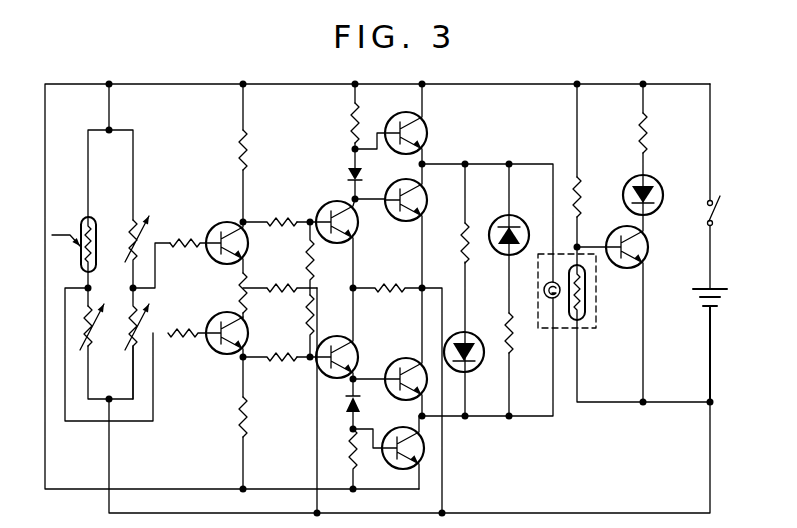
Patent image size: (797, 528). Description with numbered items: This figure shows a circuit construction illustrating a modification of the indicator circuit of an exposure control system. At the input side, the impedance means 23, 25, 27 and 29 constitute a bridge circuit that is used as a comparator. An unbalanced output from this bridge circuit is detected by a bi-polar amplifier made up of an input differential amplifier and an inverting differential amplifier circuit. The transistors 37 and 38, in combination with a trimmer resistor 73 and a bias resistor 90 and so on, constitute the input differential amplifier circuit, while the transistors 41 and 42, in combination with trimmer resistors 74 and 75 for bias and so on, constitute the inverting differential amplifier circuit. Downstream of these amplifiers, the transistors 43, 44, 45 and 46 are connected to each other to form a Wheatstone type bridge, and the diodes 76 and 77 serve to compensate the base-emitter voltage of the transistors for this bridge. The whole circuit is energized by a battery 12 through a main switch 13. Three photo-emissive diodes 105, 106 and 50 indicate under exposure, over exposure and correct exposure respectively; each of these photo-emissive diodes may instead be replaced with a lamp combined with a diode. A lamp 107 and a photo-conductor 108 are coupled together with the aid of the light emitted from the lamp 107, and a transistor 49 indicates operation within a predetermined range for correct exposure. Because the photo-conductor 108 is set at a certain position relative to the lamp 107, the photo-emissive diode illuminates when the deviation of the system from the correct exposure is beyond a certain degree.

The battery 12 is at (722, 288).
The main switch 13 is at (723, 208).
The impedance means 23 is at (97, 220).
The impedance means 25 is at (92, 348).
The impedance means 27 is at (139, 226).
The impedance means 29 is at (142, 322).
The transistor 37 is at (249, 327).
The transistor 38 is at (212, 225).
The transistor 41 is at (350, 339).
The transistor 42 is at (322, 206).
The transistor 43 is at (425, 454).
The transistor 44 is at (405, 358).
The transistor 45 is at (426, 209).
The transistor 46 is at (424, 122).
The transistor 49 is at (648, 245).
The photo-emissive diode 50 is at (652, 177).
The trimmer resistor 73 is at (240, 292).
The trimmer resistor 74 is at (313, 258).
The trimmer resistor 75 is at (313, 318).
The diode 76 is at (362, 172).
The diode 77 is at (361, 404).
The bias resistor 90 is at (283, 287).
The photo-emissive diode 105 is at (472, 334).
The photo-emissive diode 106 is at (513, 214).
The lamp 107 is at (548, 300).
The photo-conductor 108 is at (588, 301).